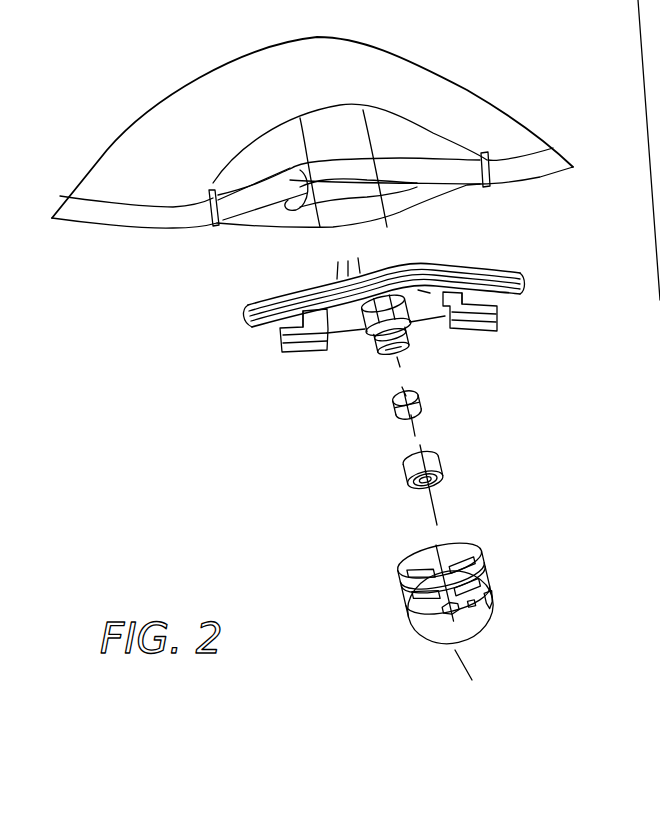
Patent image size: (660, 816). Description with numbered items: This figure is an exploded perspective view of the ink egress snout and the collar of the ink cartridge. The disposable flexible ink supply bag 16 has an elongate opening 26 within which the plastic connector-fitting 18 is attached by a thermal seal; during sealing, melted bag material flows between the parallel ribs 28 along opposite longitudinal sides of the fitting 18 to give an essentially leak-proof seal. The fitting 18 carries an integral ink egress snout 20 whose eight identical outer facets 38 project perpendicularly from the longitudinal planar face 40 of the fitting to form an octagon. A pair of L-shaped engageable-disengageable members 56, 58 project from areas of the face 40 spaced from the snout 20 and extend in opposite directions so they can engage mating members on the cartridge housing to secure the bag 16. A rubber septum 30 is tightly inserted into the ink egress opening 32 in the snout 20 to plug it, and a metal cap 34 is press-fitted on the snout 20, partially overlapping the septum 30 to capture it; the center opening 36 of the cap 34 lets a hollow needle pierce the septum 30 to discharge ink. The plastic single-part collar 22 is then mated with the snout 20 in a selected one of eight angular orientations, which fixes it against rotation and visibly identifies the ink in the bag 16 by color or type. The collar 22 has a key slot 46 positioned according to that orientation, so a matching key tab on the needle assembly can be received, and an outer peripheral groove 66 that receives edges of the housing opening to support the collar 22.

The flexible ink supply bag 16 is at (150, 153).
The elongate opening 26 is at (302, 180).
The connector-fitting 18 is at (352, 314).
The parallel ribs 28 is at (300, 286).
The outer peripheral facets 38 is at (377, 268).
The longitudinal planar face 40 is at (418, 292).
The L-shaped engageable-disengageable member 56 is at (292, 355).
The L-shaped engageable-disengageable member 58 is at (498, 330).
The ink egress opening 32 is at (405, 351).
The ink egress snout 20 is at (377, 351).
The rubber septum 30 is at (396, 408).
The cap 34 is at (454, 458).
The center opening 36 is at (442, 461).
The collar 22 is at (449, 610).
The outer peripheral groove 66 is at (444, 580).
The key slot 46 is at (490, 600).